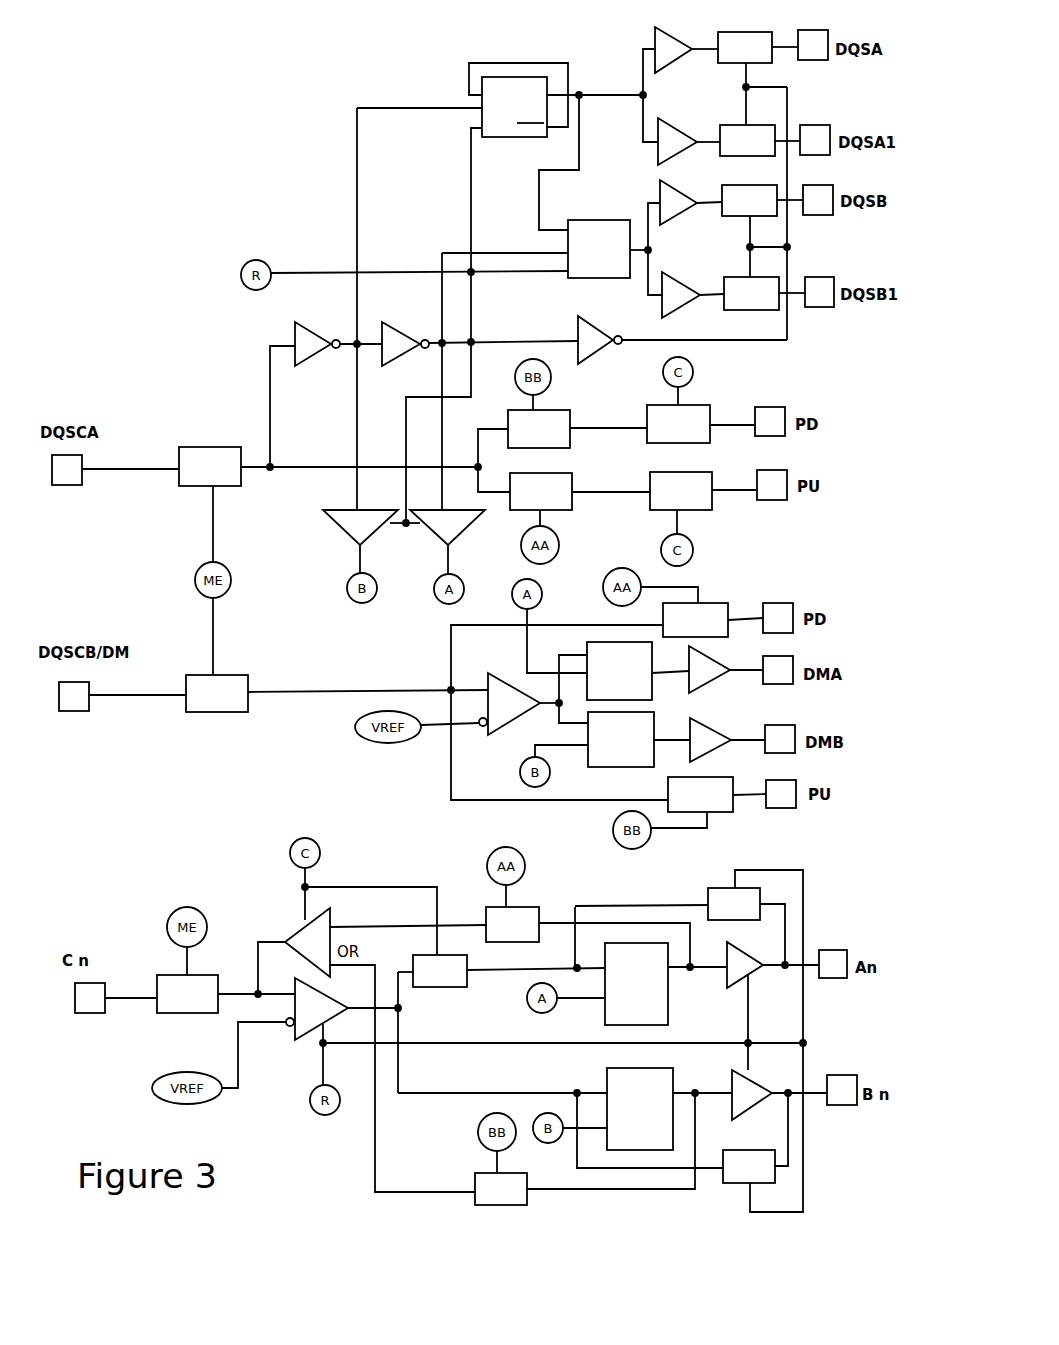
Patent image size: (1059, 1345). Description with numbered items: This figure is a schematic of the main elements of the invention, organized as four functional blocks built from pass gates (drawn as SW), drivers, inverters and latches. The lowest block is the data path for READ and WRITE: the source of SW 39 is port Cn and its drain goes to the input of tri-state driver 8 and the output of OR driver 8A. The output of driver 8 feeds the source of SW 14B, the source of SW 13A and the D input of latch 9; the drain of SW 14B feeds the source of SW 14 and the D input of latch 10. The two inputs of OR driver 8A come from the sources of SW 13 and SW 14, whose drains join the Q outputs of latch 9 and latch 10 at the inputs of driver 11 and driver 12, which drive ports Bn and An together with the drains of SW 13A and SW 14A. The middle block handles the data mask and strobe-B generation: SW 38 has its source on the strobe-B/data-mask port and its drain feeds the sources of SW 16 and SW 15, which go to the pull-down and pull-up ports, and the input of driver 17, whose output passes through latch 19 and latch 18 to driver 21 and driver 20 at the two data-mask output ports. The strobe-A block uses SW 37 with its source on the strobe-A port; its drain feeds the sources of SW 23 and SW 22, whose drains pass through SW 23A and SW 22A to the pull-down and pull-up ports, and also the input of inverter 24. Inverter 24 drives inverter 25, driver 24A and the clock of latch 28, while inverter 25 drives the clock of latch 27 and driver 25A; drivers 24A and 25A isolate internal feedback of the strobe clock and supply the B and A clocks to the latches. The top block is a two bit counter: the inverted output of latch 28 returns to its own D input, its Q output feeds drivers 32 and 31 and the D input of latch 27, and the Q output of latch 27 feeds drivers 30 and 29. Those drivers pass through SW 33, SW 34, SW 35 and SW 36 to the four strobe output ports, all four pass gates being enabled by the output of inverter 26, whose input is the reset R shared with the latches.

The tri-state driver 8 is at (317, 1009).
The OR driver 8A is at (307, 942).
The data latch 9 is at (640, 1109).
The data latch 10 is at (636, 984).
The driver 11 is at (752, 1095).
The driver 12 is at (745, 965).
The pass gate SW 13 is at (470, 1198).
The pass gate SW 13A is at (778, 1177).
The pass gate SW 14 is at (527, 904).
The pass gate SW 14A is at (763, 888).
The pass gate SW 14B is at (442, 988).
The pass gate SW 15 is at (741, 805).
The pass gate SW 16 is at (735, 598).
The driver 17 is at (509, 704).
The data latch 18 is at (621, 750).
The data latch 19 is at (619, 661).
The driver 20 is at (710, 740).
The driver 21 is at (709, 669).
The pass gate SW 22 is at (565, 510).
The pass gate SW 22A is at (705, 517).
The pass gate SW 23 is at (562, 408).
The pass gate SW 23A is at (713, 405).
The inverter 24 is at (317, 344).
The driver 24A is at (360, 527).
The inverter 25 is at (405, 344).
The driver 25A is at (447, 527).
The inverter 26 is at (600, 340).
The latch 27 is at (599, 238).
The latch 28 is at (514, 92).
The driver 29 is at (681, 295).
The driver 30 is at (678, 202).
The driver 31 is at (677, 141).
The driver 32 is at (673, 50).
The pass gate SW 33 is at (766, 28).
The pass gate SW 34 is at (770, 120).
The pass gate SW 35 is at (778, 212).
The pass gate SW 36 is at (781, 312).
The pass gate SW 37 is at (246, 478).
The pass gate SW 38 is at (235, 664).
The pass gate SW 39 is at (219, 968).